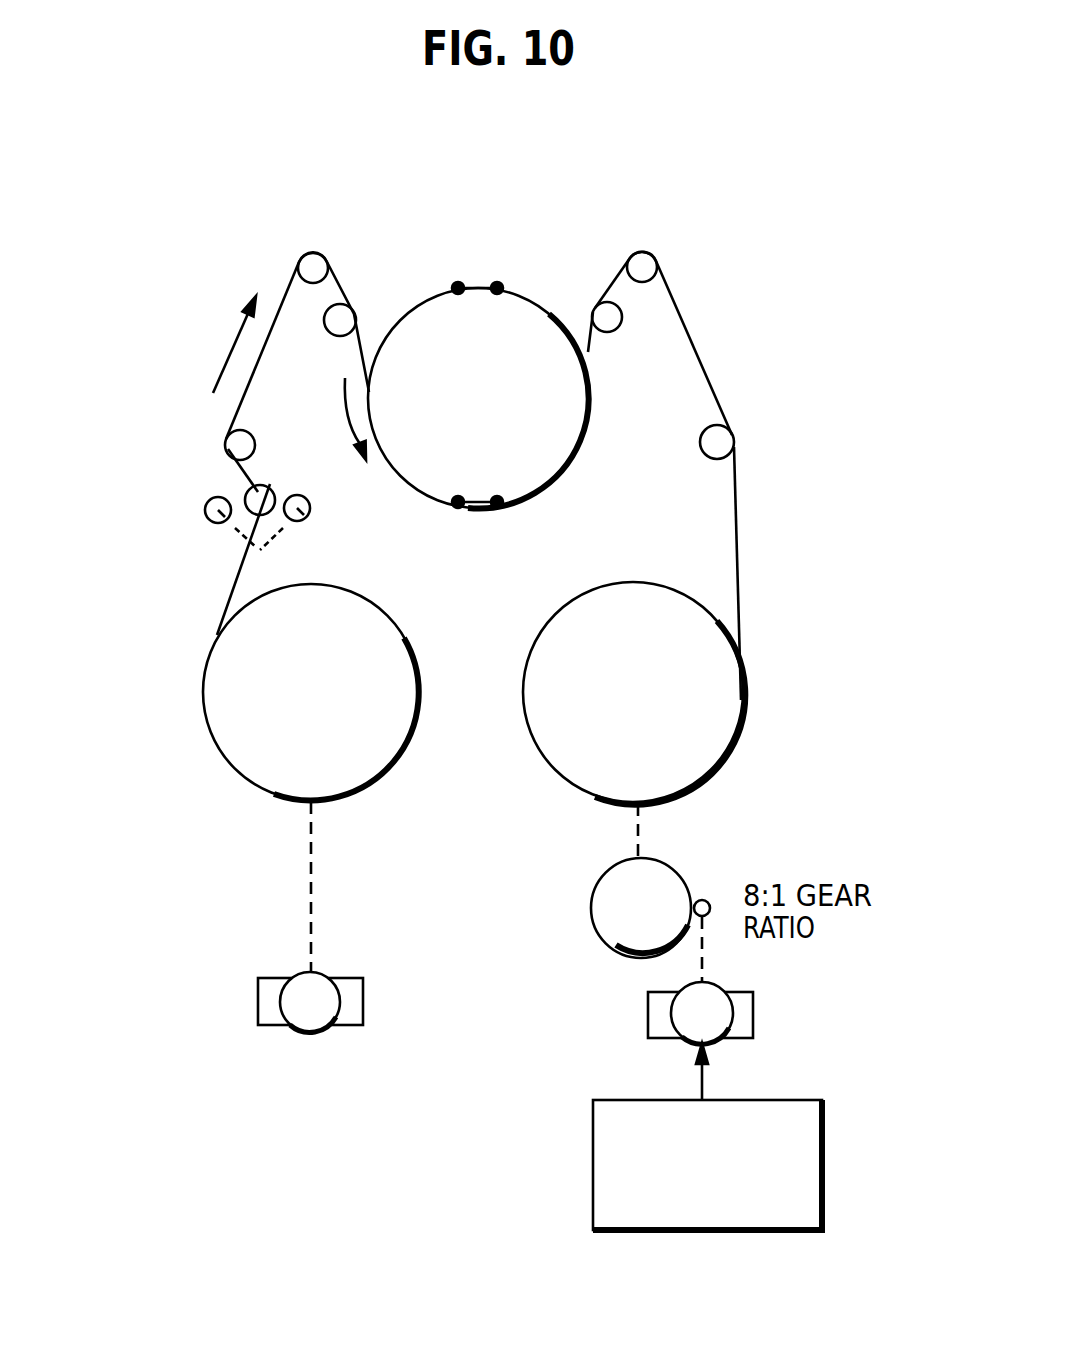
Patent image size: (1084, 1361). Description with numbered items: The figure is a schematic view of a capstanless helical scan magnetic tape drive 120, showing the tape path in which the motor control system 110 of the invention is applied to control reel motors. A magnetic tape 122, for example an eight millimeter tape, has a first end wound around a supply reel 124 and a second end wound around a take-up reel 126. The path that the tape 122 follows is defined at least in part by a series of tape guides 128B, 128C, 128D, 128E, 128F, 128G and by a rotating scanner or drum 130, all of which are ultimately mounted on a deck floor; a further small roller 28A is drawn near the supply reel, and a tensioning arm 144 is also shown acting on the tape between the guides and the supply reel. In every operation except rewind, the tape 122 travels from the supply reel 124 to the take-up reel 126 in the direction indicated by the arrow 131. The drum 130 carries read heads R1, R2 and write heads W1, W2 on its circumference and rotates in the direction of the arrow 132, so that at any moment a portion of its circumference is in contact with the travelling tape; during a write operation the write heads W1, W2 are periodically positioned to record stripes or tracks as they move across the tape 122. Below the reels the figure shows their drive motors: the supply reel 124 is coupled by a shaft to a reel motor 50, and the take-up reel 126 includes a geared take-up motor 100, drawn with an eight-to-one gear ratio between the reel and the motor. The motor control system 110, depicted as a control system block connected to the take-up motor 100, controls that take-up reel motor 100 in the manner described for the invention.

The helical scan magnetic tape drive 120 is at (572, 424).
The magnetic tape 122 is at (707, 367).
The supply reel 124 is at (368, 627).
The take-up reel 126 is at (617, 613).
The tape guide 128B is at (243, 447).
The tape guide 128C is at (318, 272).
The tape guide 128D is at (338, 320).
The tape guide 128E is at (600, 316).
The tape guide 128F is at (639, 265).
The tape guide 128G is at (720, 442).
The roller 28A is at (262, 503).
The drum 130 is at (535, 435).
The arrow 131 is at (225, 360).
The arrow 132 is at (348, 417).
The tensioning arm 144 is at (218, 548).
The read head R1 is at (460, 286).
The read head R2 is at (499, 286).
The write head W1 is at (497, 505).
The write head W2 is at (458, 505).
The supply reel motor 50 is at (363, 1007).
The take-up motor 100 is at (753, 1022).
The motor control system 110 is at (823, 1147).